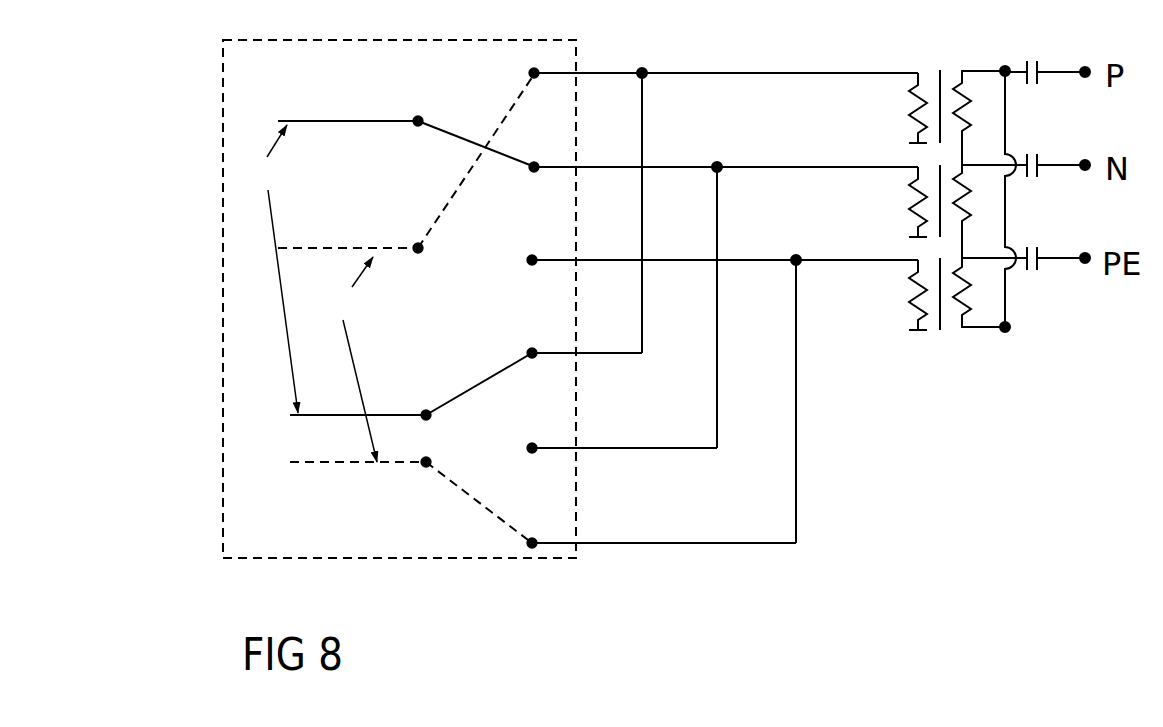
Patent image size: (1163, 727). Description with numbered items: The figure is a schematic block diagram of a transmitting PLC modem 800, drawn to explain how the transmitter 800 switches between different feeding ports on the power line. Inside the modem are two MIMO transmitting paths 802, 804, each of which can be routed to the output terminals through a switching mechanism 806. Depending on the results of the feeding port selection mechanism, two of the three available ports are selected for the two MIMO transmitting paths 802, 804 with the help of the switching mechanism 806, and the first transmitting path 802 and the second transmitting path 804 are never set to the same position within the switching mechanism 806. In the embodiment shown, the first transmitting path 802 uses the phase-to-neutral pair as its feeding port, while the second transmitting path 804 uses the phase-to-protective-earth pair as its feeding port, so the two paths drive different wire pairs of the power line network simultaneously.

The transmitting PLC modem 800 is at (413, 560).
The MIMO transmitting path 802 is at (397, 243).
The MIMO transmitting path 804 is at (411, 400).
The switching mechanism 806 is at (532, 569).